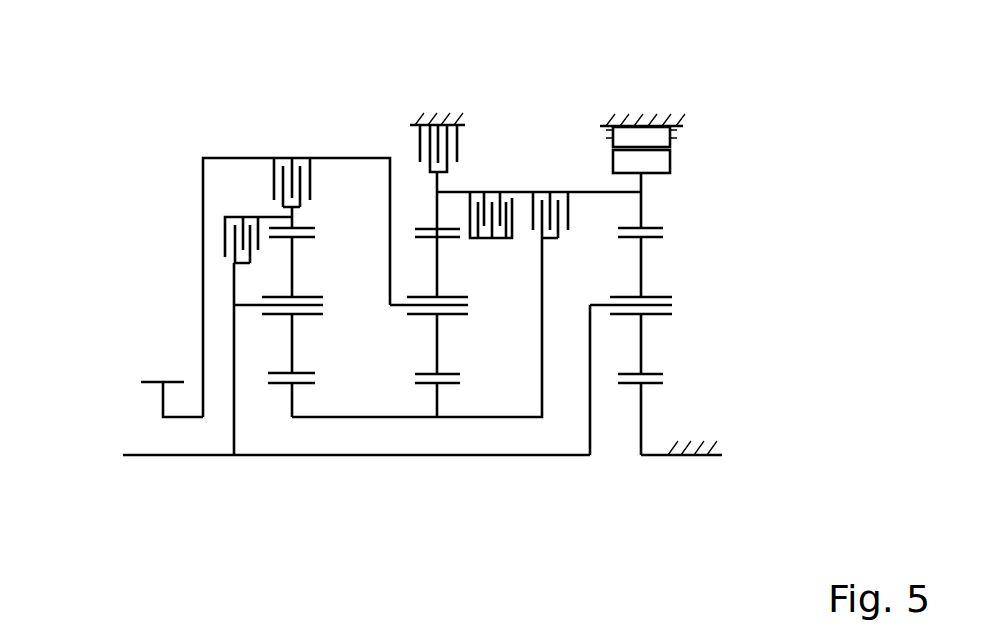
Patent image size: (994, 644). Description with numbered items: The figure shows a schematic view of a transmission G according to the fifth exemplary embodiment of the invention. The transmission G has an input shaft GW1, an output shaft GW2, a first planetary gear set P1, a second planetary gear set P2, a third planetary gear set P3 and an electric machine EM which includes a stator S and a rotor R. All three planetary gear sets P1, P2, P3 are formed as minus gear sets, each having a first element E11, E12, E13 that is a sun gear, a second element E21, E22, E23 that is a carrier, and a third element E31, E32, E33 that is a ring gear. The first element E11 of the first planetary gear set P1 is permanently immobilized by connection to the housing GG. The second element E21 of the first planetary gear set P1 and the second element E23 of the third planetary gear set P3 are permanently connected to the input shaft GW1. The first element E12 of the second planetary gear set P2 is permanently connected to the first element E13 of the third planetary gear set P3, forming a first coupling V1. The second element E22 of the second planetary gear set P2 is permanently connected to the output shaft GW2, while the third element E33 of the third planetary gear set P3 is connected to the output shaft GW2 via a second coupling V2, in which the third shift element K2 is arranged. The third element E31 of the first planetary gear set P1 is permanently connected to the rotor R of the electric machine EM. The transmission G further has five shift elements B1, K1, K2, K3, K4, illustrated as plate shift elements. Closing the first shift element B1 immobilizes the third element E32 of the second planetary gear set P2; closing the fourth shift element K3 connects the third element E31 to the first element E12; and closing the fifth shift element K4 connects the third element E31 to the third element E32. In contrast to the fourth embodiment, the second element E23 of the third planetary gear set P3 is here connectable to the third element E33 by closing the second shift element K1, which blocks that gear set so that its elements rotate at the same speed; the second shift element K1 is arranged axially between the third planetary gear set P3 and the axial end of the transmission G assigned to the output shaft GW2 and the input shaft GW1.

The transmission G is at (173, 193).
The second coupling V2 is at (223, 158).
The first coupling V1 is at (348, 419).
The input shaft GW1 is at (182, 457).
The output shaft GW2 is at (150, 380).
The second shift element K1 is at (220, 240).
The third shift element K2 is at (288, 155).
The fourth shift element K3 is at (551, 185).
The fifth shift element K4 is at (505, 187).
The first shift element B1 is at (461, 145).
The first element of the first planetary gear set E11 is at (627, 386).
The first element of the second planetary gear set E12 is at (455, 386).
The first element of the third planetary gear set E13 is at (282, 386).
The second element of the first planetary gear set E21 is at (594, 303).
The second element of the second planetary gear set E22 is at (404, 305).
The second element of the third planetary gear set E23 is at (243, 296).
The third element of the first planetary gear set E31 is at (653, 227).
The third element of the second planetary gear set E32 is at (419, 227).
The third element of the third planetary gear set E33 is at (305, 228).
The first planetary gear set P1 is at (641, 462).
The second planetary gear set P2 is at (435, 462).
The third planetary gear set P3 is at (290, 462).
The electric machine EM is at (800, 115).
The stator S is at (683, 135).
The rotor R is at (683, 162).
The housing GG is at (700, 453).